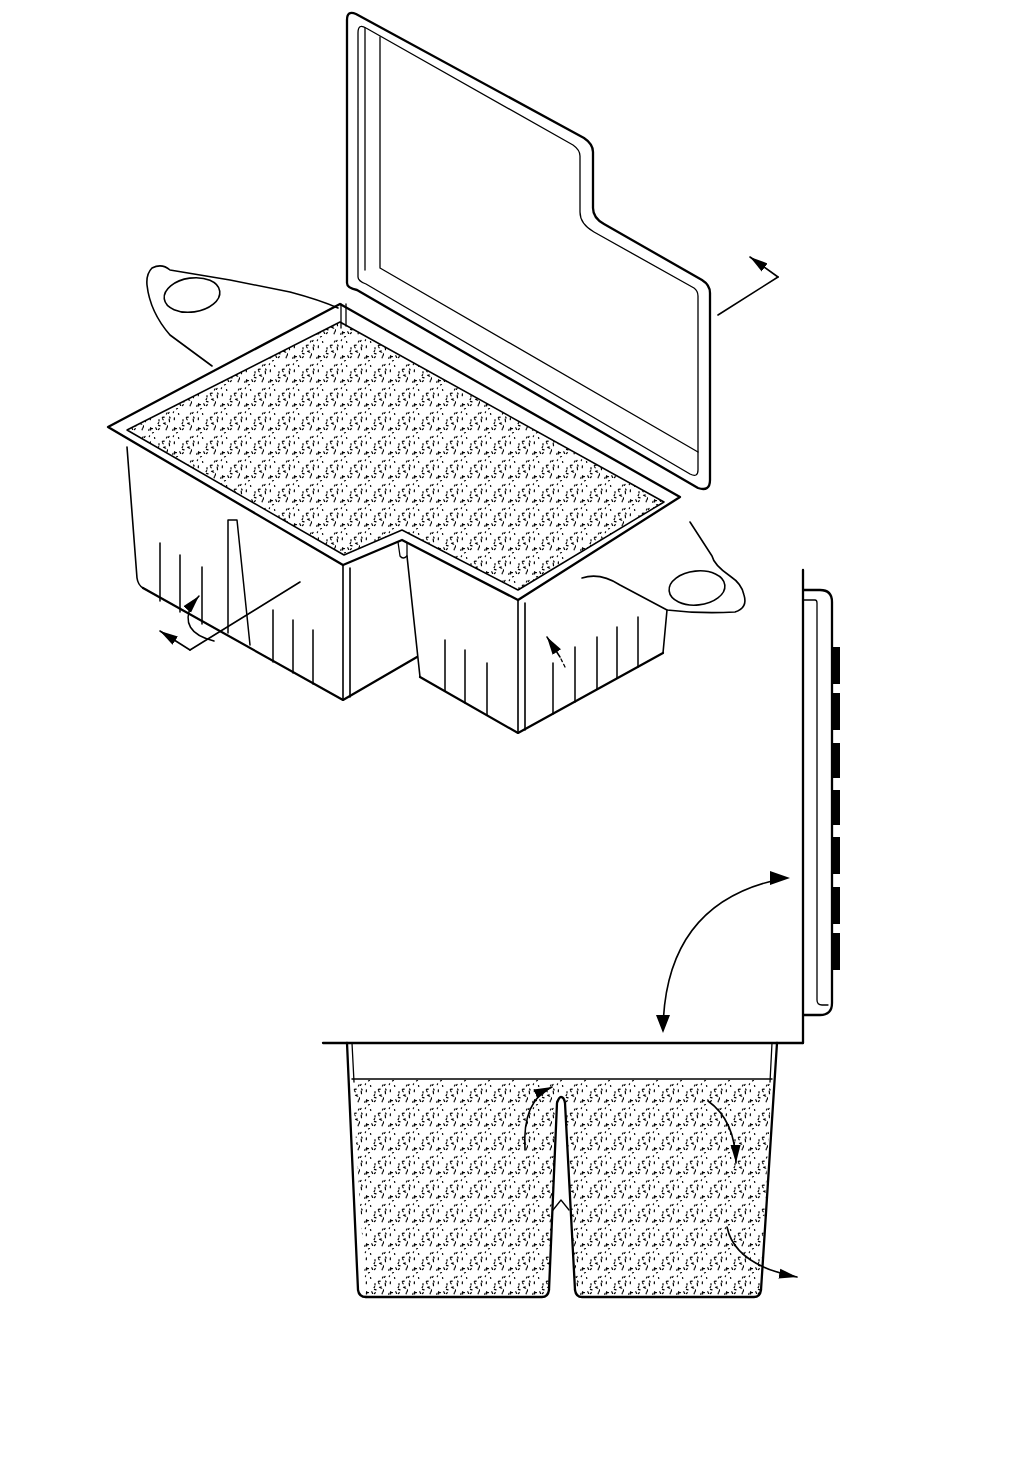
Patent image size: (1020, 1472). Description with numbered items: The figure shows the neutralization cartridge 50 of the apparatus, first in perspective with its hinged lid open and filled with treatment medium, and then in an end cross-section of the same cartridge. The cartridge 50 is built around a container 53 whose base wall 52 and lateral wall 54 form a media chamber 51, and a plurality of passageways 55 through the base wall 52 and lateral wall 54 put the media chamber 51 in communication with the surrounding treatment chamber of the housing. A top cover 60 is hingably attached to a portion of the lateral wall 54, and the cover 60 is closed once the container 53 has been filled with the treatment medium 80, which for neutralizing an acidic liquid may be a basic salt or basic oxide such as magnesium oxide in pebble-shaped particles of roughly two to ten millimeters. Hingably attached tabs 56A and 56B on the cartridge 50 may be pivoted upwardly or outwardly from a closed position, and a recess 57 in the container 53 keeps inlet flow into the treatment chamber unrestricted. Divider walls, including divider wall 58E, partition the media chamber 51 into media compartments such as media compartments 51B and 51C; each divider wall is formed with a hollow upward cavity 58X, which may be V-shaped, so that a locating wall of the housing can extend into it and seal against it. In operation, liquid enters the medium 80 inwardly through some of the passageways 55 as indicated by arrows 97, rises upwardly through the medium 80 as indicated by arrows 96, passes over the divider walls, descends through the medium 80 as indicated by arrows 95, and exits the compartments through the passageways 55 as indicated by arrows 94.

In FIG. 9A, the cartridge 50 is at (256, 200).
In FIG. 9B, the cartridge 50 is at (578, 966).
In FIG. 9A, the media chamber 51 is at (577, 517).
In FIG. 9B, the media chamber 51 is at (620, 1102).
In FIG. 9B, the media compartment 51B is at (745, 1222).
In FIG. 9B, the media compartment 51C is at (388, 1217).
In FIG. 9A, the base wall 52 is at (380, 683).
In FIG. 9B, the base wall 52 is at (405, 1302).
In FIG. 9A, the container 53 is at (120, 503).
In FIG. 9B, the container 53 is at (335, 1087).
In FIG. 9A, the lateral wall 54 is at (600, 627).
In FIG. 9B, the lateral wall 54 is at (352, 1162).
In FIG. 9A, the passageways 55 is at (185, 594).
In FIG. 9A, the hingably attached tab 56A is at (677, 552).
In FIG. 9A, the hingably attached tab 56B is at (259, 312).
In FIG. 9A, the recess 57 is at (400, 547).
In FIG. 9B, the divider wall 58E is at (560, 1297).
In FIG. 9B, the hollow upward cavity 58X is at (563, 1170).
In FIG. 9A, the top cover 60 is at (552, 175).
In FIG. 9B, the top cover 60 is at (803, 771).
In FIG. 9A, the treatment medium 80 is at (419, 470).
In FIG. 9B, the treatment medium 80 is at (469, 1194).
In FIG. 9A, the arrows 94 is at (233, 645).
In FIG. 9B, the arrows 94 is at (770, 1277).
In FIG. 9B, the arrows 95 is at (730, 1124).
In FIG. 9B, the arrows 96 is at (525, 1125).
In FIG. 9A, the arrows 97 is at (565, 667).